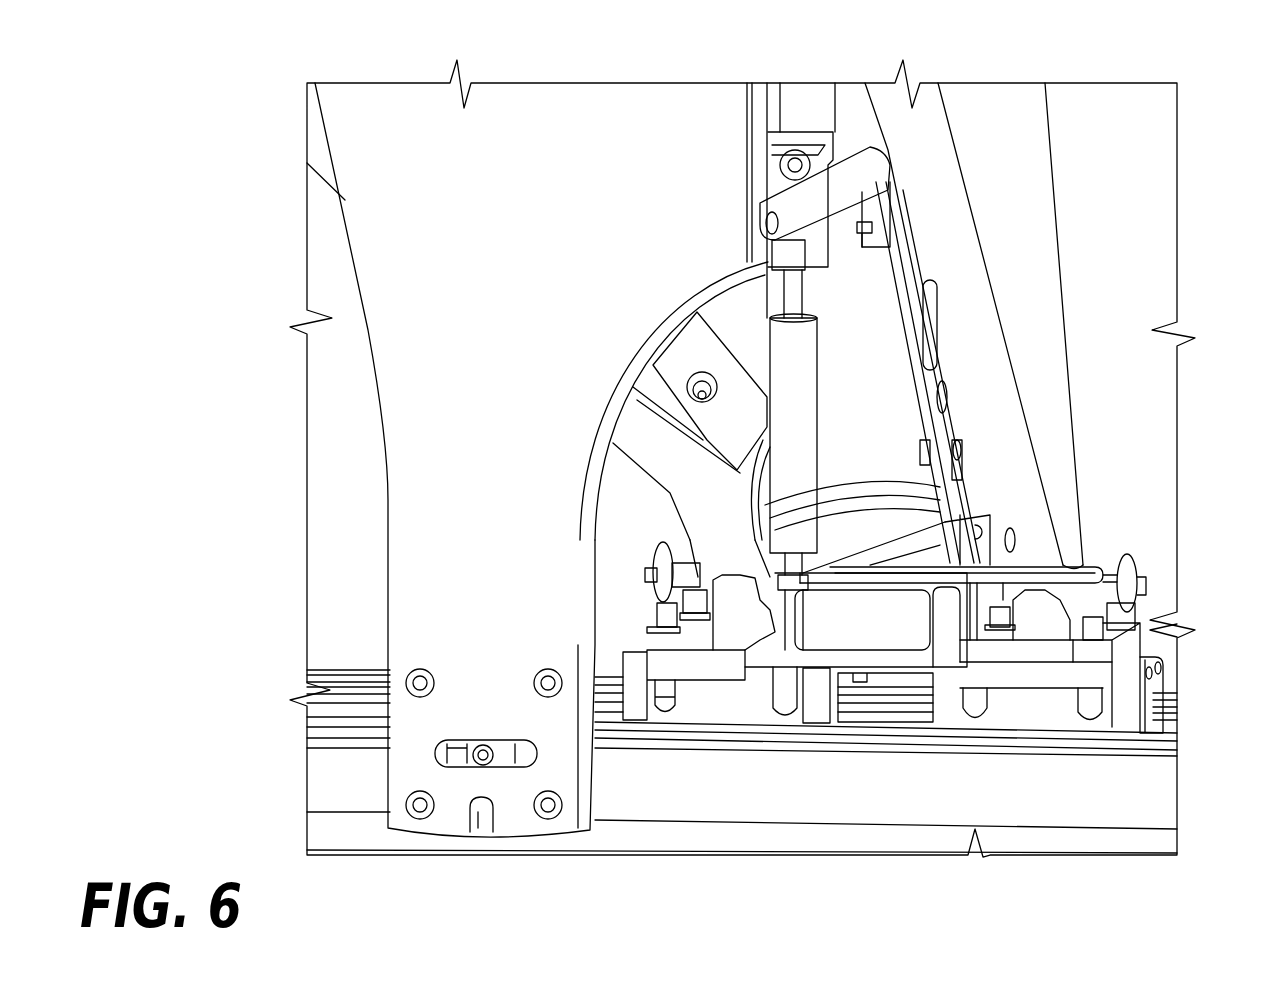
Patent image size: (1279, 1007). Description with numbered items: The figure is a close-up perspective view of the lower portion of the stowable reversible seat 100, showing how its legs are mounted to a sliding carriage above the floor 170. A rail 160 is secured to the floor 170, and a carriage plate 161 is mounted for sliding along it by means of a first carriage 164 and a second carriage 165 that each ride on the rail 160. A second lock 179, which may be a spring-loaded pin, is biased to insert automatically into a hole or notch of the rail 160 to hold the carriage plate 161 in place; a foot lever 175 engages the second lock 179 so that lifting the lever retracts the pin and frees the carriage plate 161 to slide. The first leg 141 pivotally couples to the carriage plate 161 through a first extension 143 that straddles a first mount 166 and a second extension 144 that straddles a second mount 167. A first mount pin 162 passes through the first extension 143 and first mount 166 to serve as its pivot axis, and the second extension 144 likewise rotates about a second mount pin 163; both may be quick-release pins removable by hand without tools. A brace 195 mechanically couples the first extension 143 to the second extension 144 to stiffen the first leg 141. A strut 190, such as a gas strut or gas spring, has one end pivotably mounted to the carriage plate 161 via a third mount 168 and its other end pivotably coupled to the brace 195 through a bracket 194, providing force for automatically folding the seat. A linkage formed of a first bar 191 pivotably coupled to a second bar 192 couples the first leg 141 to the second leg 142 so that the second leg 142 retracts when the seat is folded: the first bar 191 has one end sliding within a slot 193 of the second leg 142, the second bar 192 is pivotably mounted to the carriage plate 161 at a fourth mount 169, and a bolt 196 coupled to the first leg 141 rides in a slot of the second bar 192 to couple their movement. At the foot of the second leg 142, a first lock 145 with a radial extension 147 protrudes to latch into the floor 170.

The stowable reversible seat 100 is at (250, 70).
The first leg 141 is at (1018, 100).
The second leg 142 is at (545, 105).
The first extension 143 is at (1013, 540).
The second extension 144 is at (698, 522).
The first lock 145 is at (484, 835).
The radial extension 147 is at (490, 765).
The rail 160 is at (1180, 730).
The carriage plate 161 is at (1153, 628).
The first mount pin 162 is at (1148, 585).
The second mount pin 163 is at (657, 575).
The first carriage 164 is at (1163, 670).
The second carriage 165 is at (641, 662).
The first mount 166 is at (1030, 628).
The second mount 167 is at (725, 615).
The third mount 168 is at (790, 642).
The fourth mount 169 is at (945, 647).
The floor 170 is at (332, 830).
The foot lever 175 is at (1105, 570).
The second lock 179 is at (872, 682).
The strut 190 is at (810, 378).
The first bar 191 is at (850, 160).
The second bar 192 is at (922, 405).
The slot 193 is at (760, 100).
The bracket 194 is at (781, 132).
The brace 195 is at (836, 125).
The bolt 196 is at (962, 453).